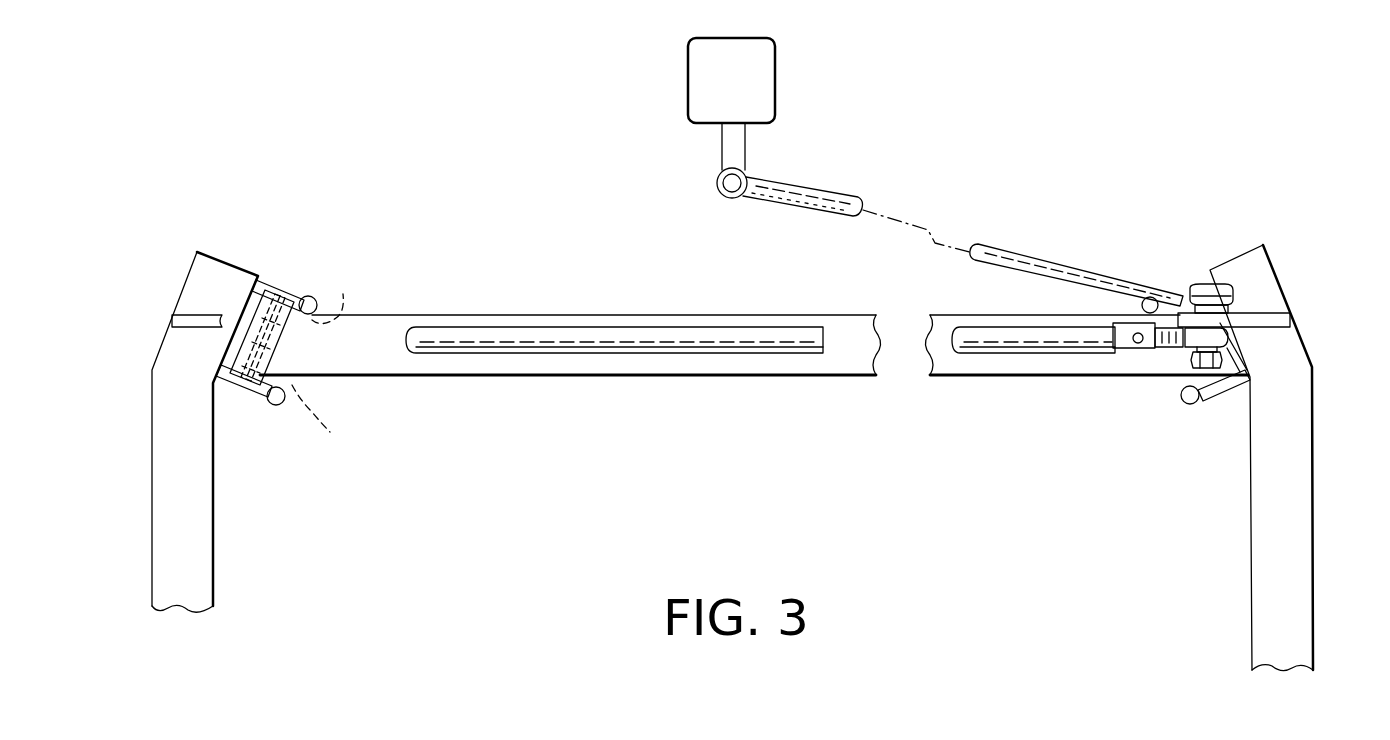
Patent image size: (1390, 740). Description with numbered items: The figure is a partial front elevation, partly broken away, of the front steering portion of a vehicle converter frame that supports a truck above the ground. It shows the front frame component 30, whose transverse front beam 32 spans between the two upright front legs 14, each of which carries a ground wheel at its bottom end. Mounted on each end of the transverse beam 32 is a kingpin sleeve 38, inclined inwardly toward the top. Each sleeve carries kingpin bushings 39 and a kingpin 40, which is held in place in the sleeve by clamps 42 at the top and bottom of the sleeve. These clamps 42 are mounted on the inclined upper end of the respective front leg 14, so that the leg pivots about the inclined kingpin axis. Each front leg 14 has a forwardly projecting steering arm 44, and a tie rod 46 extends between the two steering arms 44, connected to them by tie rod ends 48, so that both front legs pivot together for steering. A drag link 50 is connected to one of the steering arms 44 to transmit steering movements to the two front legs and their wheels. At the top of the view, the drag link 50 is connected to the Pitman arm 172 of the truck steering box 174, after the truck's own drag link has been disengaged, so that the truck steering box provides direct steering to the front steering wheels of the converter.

The front leg 14 is at (150, 460).
The front frame component 30 is at (656, 310).
The transverse front beam 32 is at (599, 380).
The kingpin sleeve 38 is at (287, 347).
The kingpin bushings 39 is at (343, 298).
The kingpin 40 is at (294, 280).
The clamps 42 is at (270, 282).
The steering arm 44 is at (193, 318).
The tie rod 46 is at (573, 342).
The tie rod ends 48 is at (1183, 358).
The drag link 50 is at (838, 212).
The Pitman arm 172 is at (720, 150).
The truck steering box 174 is at (747, 92).